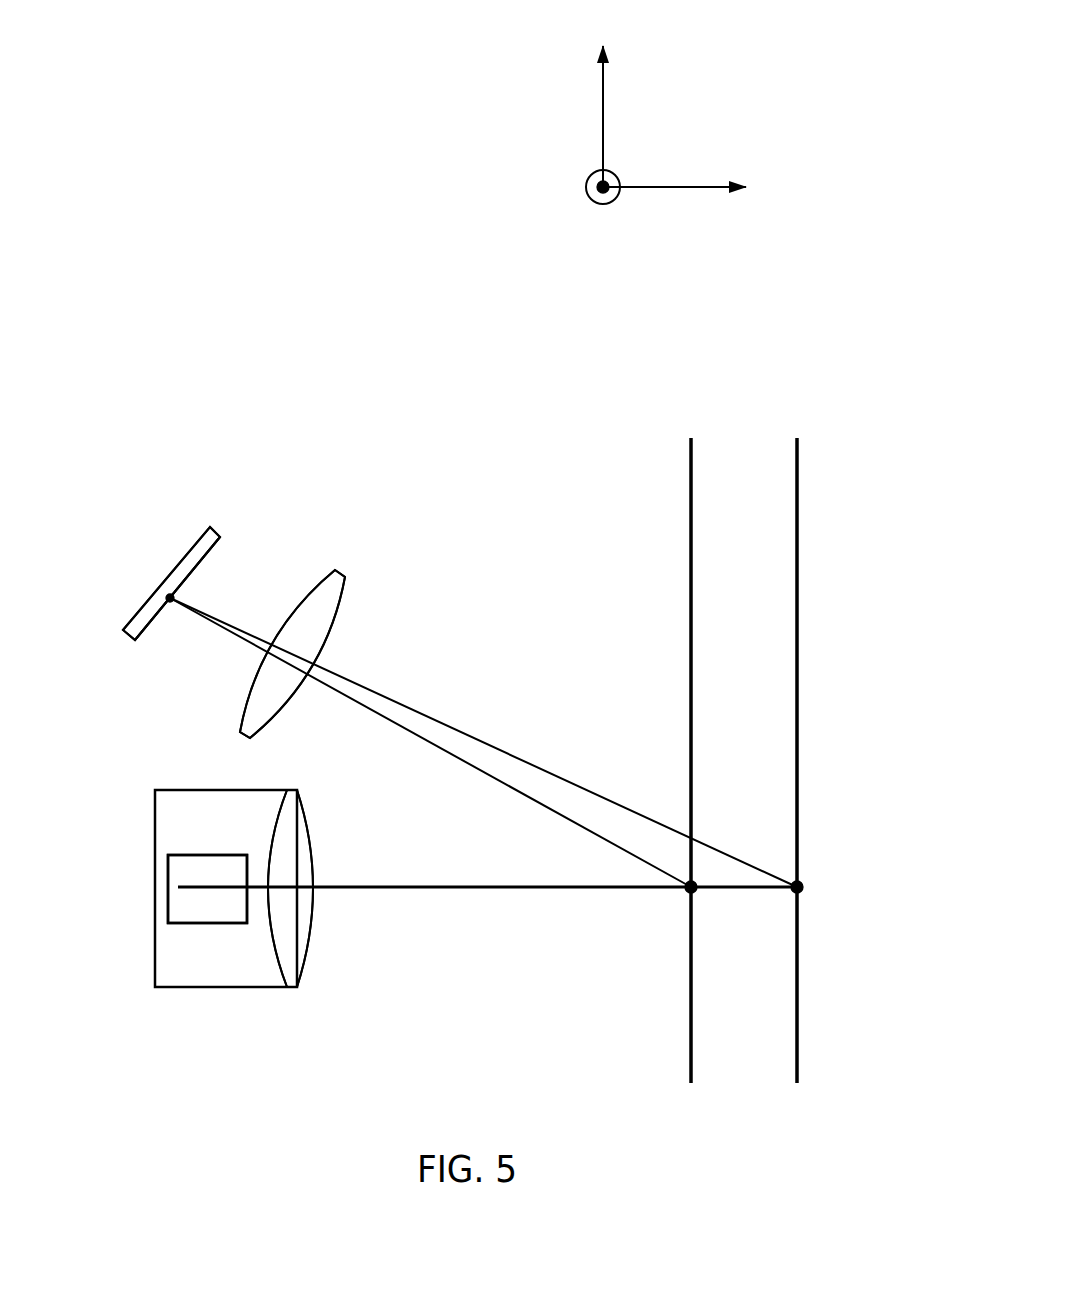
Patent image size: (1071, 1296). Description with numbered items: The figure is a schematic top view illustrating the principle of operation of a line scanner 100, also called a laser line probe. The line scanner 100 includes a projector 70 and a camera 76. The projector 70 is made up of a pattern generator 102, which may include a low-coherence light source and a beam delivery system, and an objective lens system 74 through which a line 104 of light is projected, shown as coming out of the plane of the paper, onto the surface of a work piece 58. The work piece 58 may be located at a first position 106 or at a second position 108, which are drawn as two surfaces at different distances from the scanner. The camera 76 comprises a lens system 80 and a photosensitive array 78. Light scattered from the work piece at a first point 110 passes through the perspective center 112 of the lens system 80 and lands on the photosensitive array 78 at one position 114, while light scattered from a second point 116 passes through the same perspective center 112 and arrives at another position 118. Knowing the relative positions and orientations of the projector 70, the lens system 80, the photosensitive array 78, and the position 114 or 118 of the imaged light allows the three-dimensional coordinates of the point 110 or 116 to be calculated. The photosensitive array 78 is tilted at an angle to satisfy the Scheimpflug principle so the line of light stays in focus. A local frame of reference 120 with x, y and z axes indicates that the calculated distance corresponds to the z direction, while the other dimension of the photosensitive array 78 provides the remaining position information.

The local frame of reference 120 is at (660, 152).
The line scanner 100 is at (371, 296).
The work piece 58 is at (776, 321).
The first position 106 is at (693, 462).
The second position 108 is at (798, 462).
The camera 76 is at (362, 462).
The photosensitive array 78 is at (217, 530).
The position on the photosensitive array 114 is at (175, 588).
The position on the photosensitive array 118 is at (165, 600).
The lens system 80 is at (337, 568).
The perspective center 112 is at (297, 657).
The projector 70 is at (207, 1017).
The pattern generator 102 is at (193, 853).
The objective lens system 74 is at (303, 978).
The line 104 is at (518, 890).
The first point 110 is at (688, 895).
The second point 116 is at (800, 895).